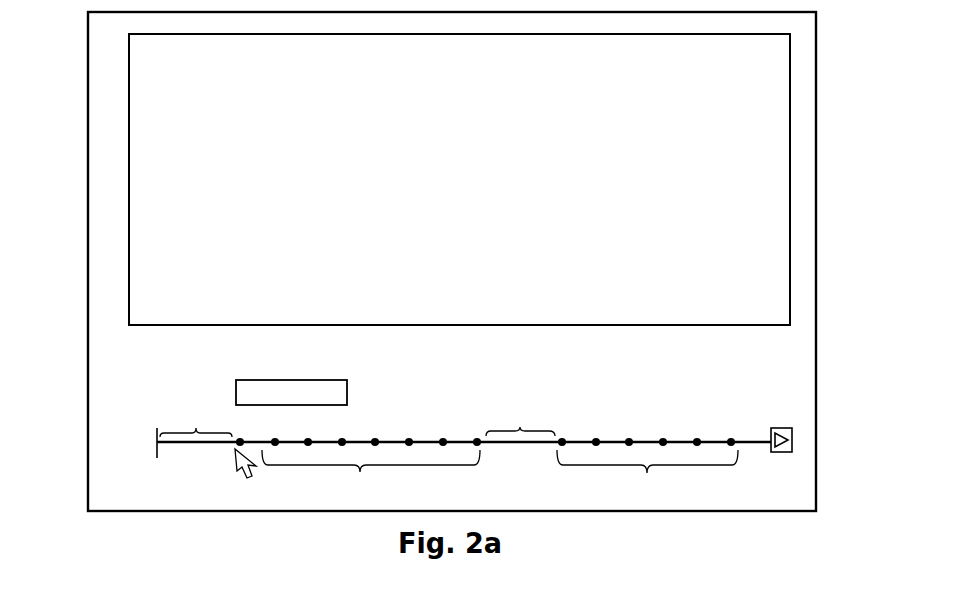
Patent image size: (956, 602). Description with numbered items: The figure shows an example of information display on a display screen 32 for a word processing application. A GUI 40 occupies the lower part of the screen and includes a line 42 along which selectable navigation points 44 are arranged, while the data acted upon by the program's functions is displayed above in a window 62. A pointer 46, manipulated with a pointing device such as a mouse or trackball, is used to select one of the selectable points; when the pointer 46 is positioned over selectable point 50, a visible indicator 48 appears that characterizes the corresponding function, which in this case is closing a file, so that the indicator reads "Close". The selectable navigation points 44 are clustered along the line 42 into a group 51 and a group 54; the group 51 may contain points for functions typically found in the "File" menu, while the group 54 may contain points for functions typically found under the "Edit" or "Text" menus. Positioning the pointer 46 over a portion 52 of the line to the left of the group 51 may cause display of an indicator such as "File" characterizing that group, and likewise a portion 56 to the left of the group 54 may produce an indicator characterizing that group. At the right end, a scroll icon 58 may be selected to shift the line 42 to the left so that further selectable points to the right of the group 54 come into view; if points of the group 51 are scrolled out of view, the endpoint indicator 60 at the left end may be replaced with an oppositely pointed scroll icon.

The display screen 32 is at (105, 180).
The window 62 is at (773, 112).
The GUI 40 is at (716, 370).
The visible indicator 48 is at (337, 388).
The endpoint indicator 60 is at (157, 456).
The portion of line 52 is at (196, 421).
The selectable navigation points 44 is at (665, 438).
The selectable point 50 is at (246, 470).
The pointer 46 is at (276, 443).
The group 51 is at (371, 475).
The portion of line 56 is at (520, 417).
The group 54 is at (647, 476).
The line 42 is at (743, 442).
The scroll icon 58 is at (780, 428).